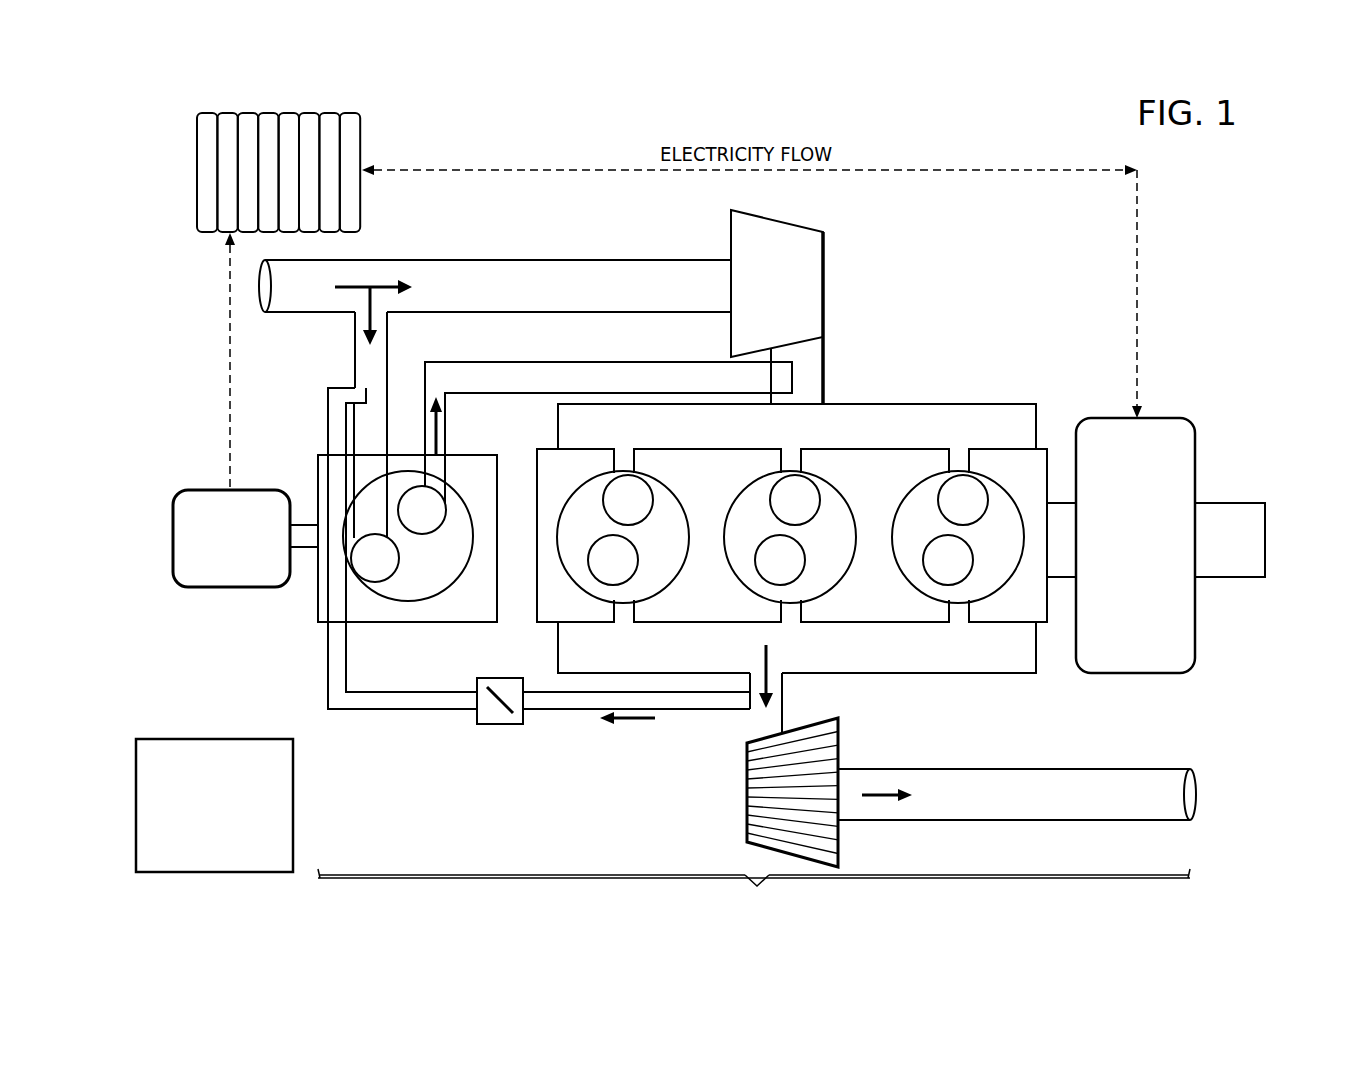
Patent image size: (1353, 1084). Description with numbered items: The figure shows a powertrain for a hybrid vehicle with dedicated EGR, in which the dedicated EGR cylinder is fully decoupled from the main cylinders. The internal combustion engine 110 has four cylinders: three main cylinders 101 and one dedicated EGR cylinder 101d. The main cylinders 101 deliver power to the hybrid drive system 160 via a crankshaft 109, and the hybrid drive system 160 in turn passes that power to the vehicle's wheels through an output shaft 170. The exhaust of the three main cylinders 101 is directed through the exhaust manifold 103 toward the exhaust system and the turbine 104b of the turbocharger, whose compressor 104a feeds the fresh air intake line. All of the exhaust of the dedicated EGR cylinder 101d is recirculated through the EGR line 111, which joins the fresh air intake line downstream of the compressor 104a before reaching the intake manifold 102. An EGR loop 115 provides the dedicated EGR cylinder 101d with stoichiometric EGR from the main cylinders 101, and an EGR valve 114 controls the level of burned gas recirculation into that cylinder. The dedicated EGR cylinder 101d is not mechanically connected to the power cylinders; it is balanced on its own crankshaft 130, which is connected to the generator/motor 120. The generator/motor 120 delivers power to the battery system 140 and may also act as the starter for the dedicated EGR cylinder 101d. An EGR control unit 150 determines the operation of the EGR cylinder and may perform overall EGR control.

The battery system 140 is at (197, 150).
The compressor 104a is at (823, 246).
The EGR line 111 is at (516, 394).
The dedicated EGR cylinder 101d is at (412, 601).
The EGR loop 115 is at (706, 712).
The EGR valve 114 is at (500, 727).
The internal combustion engine 110 is at (754, 694).
The cylinders 101 is at (743, 490).
The intake manifold 102 is at (920, 403).
The exhaust manifold 103 is at (918, 674).
The turbine 104b is at (746, 806).
The generator/motor 120 is at (213, 590).
The crankshaft 130 is at (298, 535).
The crankshaft 109 is at (1068, 552).
The hybrid drive system 160 is at (1196, 440).
The output to vehicle 170 is at (1235, 580).
The EGR control unit 150 is at (234, 862).